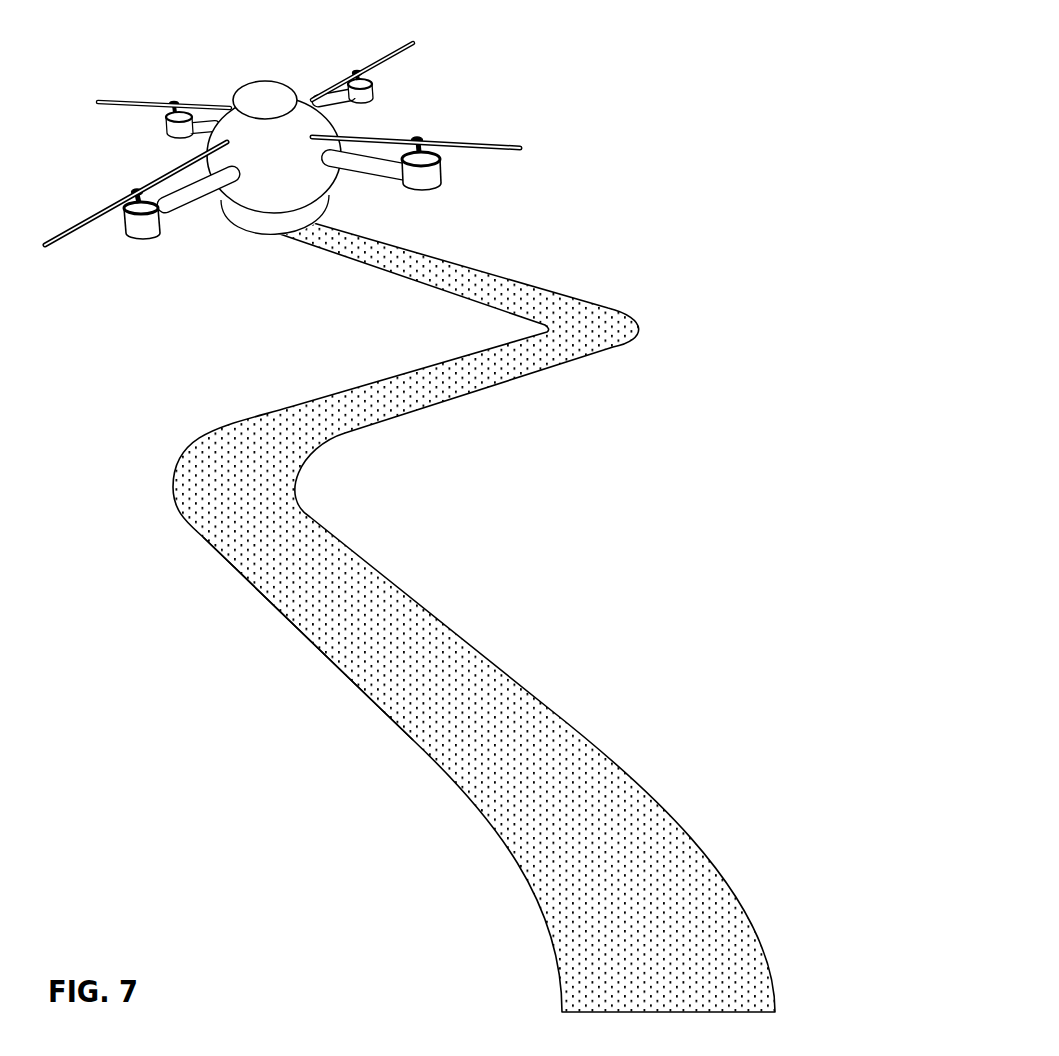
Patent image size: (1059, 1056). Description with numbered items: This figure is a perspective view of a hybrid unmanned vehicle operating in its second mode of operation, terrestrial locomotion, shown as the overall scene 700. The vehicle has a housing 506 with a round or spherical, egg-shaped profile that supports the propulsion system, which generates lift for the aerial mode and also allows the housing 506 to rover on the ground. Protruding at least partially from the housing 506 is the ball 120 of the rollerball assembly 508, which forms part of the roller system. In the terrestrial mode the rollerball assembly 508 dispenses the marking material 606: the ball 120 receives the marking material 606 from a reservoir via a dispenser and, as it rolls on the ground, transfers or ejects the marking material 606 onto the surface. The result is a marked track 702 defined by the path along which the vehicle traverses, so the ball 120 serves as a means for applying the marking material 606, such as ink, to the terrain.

The aerial vehicle flight scenario 700 is at (138, 63).
The ball 120 is at (260, 220).
The housing 506 is at (173, 150).
The rollerball assembly 508 is at (273, 278).
The marking material 606 is at (238, 552).
The track 702 is at (327, 655).